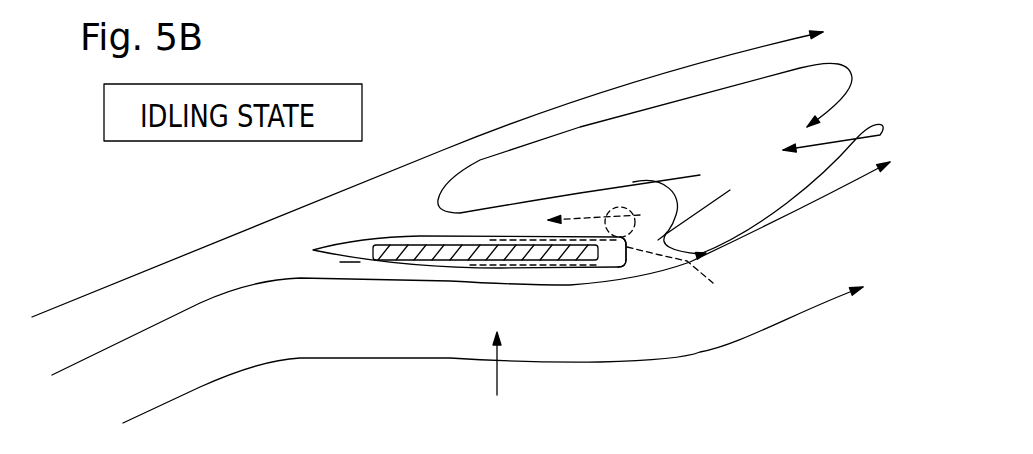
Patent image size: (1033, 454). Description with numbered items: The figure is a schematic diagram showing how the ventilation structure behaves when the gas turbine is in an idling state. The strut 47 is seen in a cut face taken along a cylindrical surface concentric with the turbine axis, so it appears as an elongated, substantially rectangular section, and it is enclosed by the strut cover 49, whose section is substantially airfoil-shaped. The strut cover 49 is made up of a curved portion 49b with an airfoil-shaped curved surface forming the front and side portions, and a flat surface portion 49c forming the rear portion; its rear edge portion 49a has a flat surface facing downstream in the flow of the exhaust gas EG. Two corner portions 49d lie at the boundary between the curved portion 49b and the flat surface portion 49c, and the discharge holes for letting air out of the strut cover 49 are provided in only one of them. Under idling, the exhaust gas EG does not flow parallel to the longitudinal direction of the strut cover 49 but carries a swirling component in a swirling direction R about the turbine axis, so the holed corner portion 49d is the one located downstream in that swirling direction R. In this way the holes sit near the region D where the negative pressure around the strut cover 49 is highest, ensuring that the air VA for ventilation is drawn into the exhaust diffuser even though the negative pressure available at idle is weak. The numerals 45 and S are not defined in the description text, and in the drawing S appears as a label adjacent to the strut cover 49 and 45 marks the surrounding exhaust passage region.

The exhaust passage 45 is at (240, 355).
The strut 47 is at (400, 258).
The strut cover 49 is at (367, 240).
The rear edge portion 49a is at (598, 268).
The curved portion 49b is at (487, 236).
The flat surface portion 49c is at (636, 252).
The corner portion 49d is at (624, 240).
The exhaust gas EG is at (598, 97).
The region D is at (670, 187).
The air for ventilation VA is at (688, 277).
The sensor S is at (353, 252).
The swirling direction R is at (499, 372).